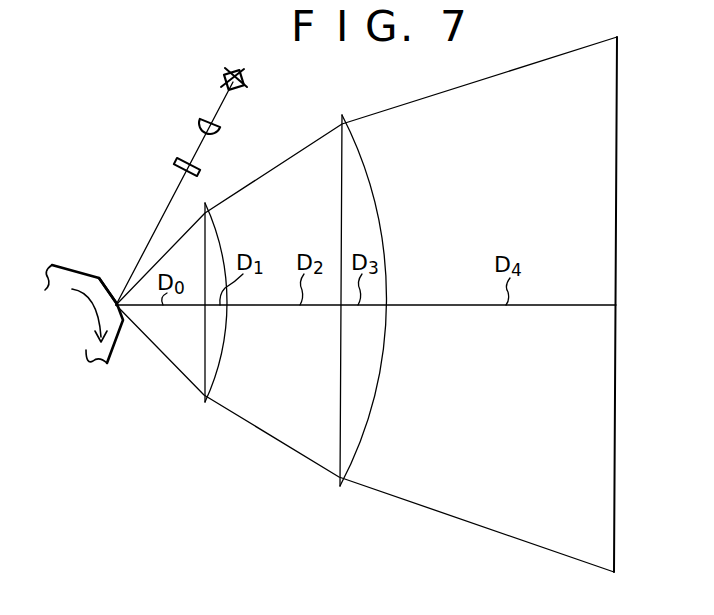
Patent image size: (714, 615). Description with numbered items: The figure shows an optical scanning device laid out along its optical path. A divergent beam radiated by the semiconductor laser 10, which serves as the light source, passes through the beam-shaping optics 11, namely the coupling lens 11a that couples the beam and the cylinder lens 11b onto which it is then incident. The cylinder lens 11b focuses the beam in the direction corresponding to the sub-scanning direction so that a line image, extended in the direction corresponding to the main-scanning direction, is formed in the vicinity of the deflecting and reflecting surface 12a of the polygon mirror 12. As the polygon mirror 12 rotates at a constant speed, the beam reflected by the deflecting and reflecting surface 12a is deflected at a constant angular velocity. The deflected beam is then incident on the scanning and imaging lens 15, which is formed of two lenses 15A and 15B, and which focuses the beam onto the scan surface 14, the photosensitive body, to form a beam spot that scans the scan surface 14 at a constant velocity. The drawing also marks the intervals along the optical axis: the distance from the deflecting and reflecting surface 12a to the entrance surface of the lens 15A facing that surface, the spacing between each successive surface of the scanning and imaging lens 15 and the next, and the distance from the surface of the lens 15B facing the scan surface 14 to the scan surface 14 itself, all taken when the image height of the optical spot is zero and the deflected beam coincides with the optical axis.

The semiconductor laser 10 is at (226, 79).
The coupling and cylinder lens group 11 is at (192, 105).
The coupling lens 11a is at (222, 128).
The cylinder lens 11b is at (200, 172).
The polygon mirror 12 is at (115, 356).
The deflecting and reflecting surface 12a is at (108, 283).
The scan surface 14 is at (616, 237).
The scanning and imaging lens 15 is at (319, 331).
The first lens of the scanning and imaging lens 15A is at (215, 375).
The second lens of the scanning and imaging lens 15B is at (378, 378).